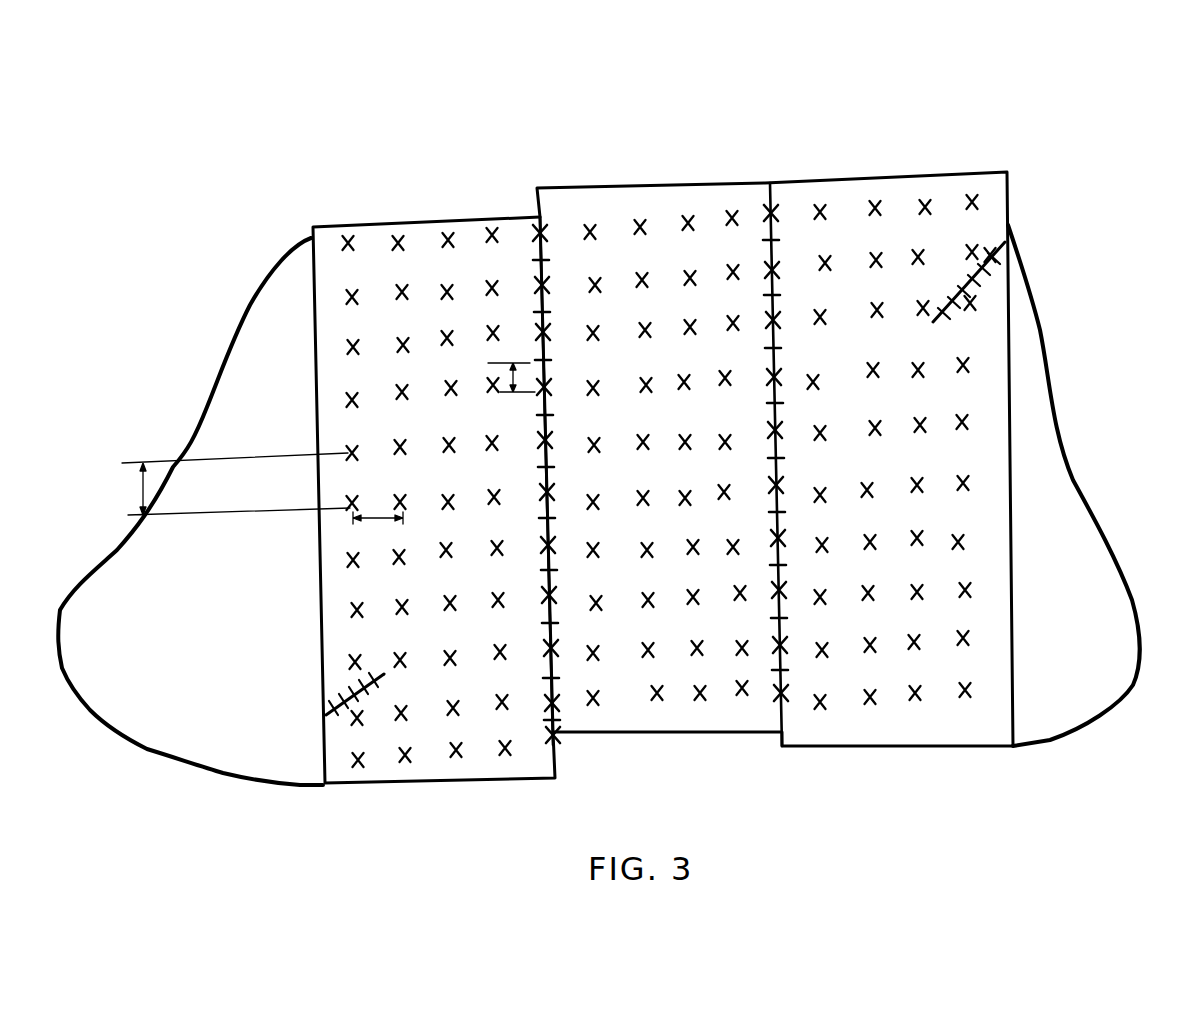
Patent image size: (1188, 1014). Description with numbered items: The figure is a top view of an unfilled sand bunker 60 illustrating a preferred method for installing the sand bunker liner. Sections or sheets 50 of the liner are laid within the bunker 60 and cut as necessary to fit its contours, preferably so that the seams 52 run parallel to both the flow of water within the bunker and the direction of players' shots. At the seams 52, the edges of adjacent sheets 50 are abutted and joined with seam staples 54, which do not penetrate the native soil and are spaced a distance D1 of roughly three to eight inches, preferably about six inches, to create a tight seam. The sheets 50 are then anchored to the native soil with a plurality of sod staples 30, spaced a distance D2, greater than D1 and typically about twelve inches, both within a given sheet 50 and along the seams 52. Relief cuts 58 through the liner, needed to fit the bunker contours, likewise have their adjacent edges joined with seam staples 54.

The sod staples 30 is at (916, 592).
The sheets 50 is at (797, 192).
The seams 52 is at (775, 637).
The seam staples 54 is at (540, 333).
The relief cuts 58 is at (980, 272).
The bunker 60 is at (1030, 420).
The spacing of seam staples D1 is at (513, 372).
The spacing of sod staples D2 is at (137, 488).